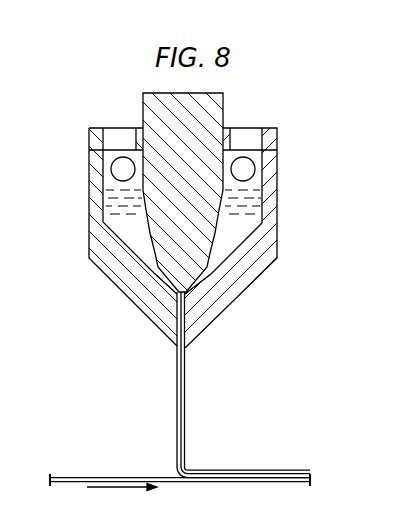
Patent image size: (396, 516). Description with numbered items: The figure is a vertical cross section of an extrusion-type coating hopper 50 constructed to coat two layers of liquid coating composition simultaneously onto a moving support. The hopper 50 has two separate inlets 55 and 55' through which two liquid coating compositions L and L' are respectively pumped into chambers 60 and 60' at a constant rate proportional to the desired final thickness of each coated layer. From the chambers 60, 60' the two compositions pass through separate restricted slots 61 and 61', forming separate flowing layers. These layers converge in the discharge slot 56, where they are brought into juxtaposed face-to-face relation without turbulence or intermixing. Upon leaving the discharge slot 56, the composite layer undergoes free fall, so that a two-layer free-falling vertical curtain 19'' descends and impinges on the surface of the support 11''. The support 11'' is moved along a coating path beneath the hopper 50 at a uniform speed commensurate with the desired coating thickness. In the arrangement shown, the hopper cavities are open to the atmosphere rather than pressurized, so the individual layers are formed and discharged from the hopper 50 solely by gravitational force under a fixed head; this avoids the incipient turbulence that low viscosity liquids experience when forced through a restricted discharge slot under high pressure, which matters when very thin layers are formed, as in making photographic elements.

The hopper 50 is at (198, 220).
The inlet 55 is at (271, 166).
The inlet 55' is at (90, 171).
The liquid coating composition L is at (261, 198).
The liquid coating composition L' is at (98, 203).
The chamber 60 is at (198, 237).
The chamber 60' is at (172, 237).
The restricted slot 61 is at (223, 272).
The restricted slot 61' is at (136, 269).
The discharge slot 56 is at (183, 330).
The free-falling vertical curtain 19'' is at (243, 412).
The support 11'' is at (180, 469).